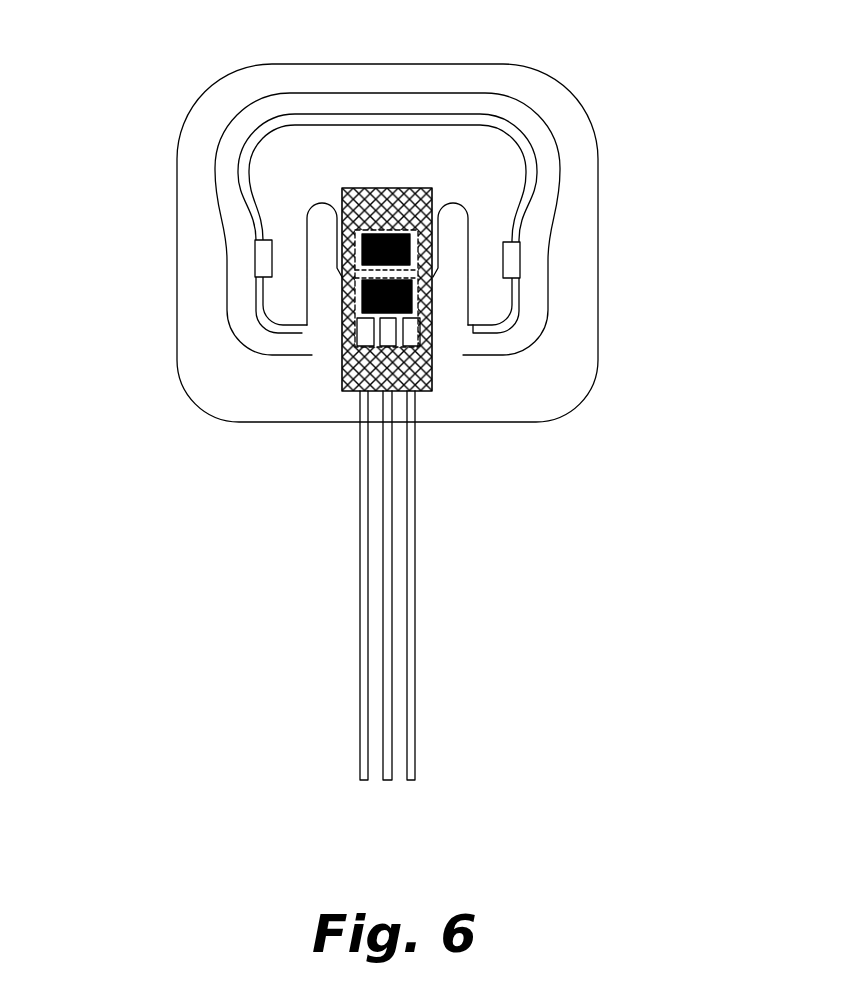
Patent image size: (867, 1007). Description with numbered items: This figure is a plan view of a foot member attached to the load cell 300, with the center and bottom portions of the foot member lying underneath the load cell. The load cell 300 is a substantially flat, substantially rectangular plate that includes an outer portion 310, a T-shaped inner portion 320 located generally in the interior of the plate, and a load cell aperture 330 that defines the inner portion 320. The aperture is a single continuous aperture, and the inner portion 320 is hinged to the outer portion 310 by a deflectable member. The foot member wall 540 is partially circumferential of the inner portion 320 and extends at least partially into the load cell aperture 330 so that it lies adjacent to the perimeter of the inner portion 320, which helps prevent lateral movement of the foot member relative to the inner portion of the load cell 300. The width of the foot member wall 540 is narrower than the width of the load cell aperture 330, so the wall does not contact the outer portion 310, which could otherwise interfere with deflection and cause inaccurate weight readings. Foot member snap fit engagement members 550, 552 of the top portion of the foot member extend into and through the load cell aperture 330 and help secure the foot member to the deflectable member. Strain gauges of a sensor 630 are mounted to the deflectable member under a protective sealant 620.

The load cell 300 is at (386, 394).
The outer portion 310 is at (443, 83).
The inner portion 320 is at (470, 168).
The load cell aperture 330 is at (538, 293).
The foot member wall 540 is at (461, 172).
The foot member snap fit engagement member 550 is at (521, 248).
The foot member snap fit engagement member 552 is at (255, 252).
The protective sealant 620 is at (357, 391).
The sensor 630 is at (343, 277).